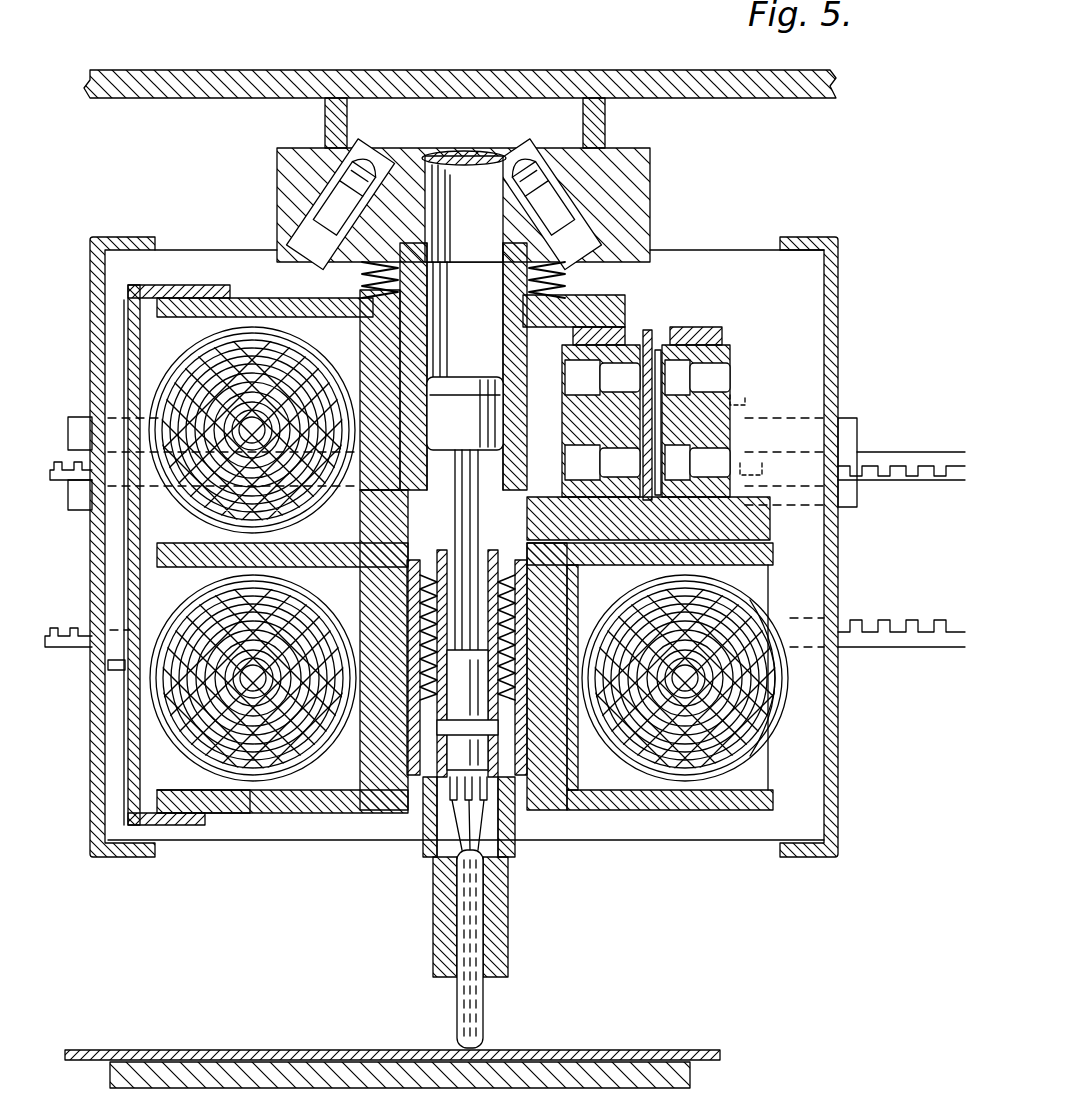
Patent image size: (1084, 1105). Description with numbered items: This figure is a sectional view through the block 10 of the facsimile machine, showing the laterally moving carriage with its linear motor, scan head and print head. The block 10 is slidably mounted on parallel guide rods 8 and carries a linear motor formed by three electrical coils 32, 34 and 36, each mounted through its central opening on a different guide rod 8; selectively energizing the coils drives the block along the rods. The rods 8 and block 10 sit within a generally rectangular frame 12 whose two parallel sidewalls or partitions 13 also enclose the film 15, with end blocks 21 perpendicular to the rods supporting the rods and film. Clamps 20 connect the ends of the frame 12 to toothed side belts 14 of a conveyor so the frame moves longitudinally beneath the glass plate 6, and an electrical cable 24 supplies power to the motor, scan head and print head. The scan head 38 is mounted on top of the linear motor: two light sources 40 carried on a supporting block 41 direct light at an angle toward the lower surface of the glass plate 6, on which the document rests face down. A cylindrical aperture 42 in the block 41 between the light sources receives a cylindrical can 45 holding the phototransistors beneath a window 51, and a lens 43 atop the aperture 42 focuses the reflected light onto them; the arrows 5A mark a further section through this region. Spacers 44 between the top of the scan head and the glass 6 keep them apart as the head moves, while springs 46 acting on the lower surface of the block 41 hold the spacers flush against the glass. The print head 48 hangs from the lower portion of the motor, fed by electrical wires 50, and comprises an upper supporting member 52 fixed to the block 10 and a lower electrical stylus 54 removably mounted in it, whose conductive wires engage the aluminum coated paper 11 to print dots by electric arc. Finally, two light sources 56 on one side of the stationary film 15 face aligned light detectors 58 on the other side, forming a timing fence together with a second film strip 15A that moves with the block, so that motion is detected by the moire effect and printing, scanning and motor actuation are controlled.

The section line 5A is at (390, 340).
The glass plate 6 is at (655, 72).
The guide rods 8 is at (215, 430).
The block 10 is at (188, 270).
The sheet of paper 11 is at (690, 1050).
The frame 12 is at (854, 262).
The sidewalls or partitions 13 is at (88, 270).
The toothed side belts 14 is at (60, 622).
The film 15 is at (660, 330).
The second strip of film 15A is at (660, 350).
The clamps 20 is at (80, 426).
The end blocks 21 is at (800, 335).
The electrical cable 24 is at (112, 668).
The electrical coil 32 is at (165, 349).
The electrical coil 34 is at (248, 796).
The electrical coil 36 is at (762, 736).
The scan head 38 is at (456, 124).
The light sources 40 is at (352, 166).
The supporting block 41 is at (652, 199).
The cylindrical aperture 42 is at (490, 225).
The lens 43 is at (470, 156).
The spacers 44 is at (325, 120).
The cylindrical can 45 is at (450, 384).
The springs 46 is at (380, 276).
The print head 48 is at (545, 812).
The electrical wires 50 is at (478, 528).
The window 51 is at (463, 366).
The upper supporting member 52 is at (437, 742).
The electrical stylus 54 is at (483, 1012).
The light sources 56 is at (715, 470).
The light detectors 58 is at (578, 462).